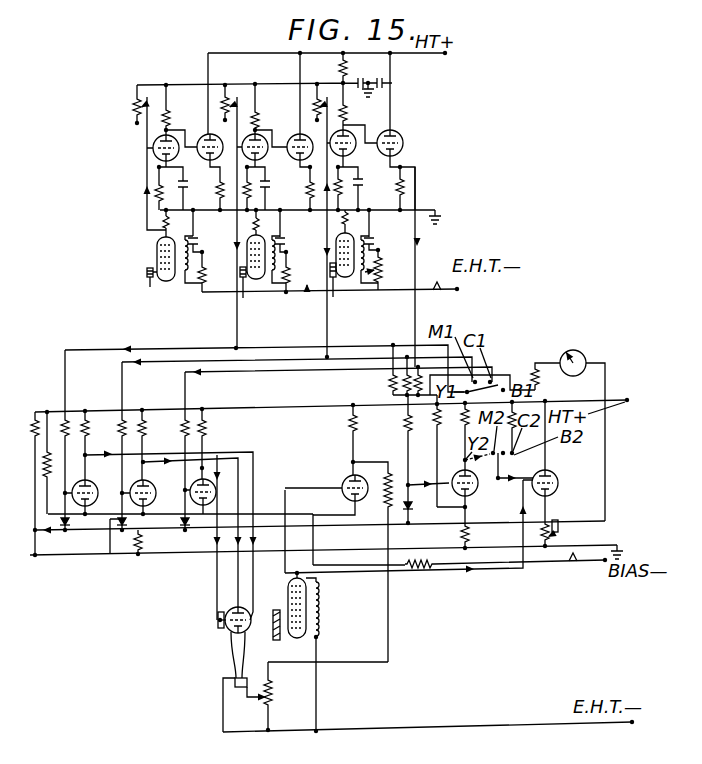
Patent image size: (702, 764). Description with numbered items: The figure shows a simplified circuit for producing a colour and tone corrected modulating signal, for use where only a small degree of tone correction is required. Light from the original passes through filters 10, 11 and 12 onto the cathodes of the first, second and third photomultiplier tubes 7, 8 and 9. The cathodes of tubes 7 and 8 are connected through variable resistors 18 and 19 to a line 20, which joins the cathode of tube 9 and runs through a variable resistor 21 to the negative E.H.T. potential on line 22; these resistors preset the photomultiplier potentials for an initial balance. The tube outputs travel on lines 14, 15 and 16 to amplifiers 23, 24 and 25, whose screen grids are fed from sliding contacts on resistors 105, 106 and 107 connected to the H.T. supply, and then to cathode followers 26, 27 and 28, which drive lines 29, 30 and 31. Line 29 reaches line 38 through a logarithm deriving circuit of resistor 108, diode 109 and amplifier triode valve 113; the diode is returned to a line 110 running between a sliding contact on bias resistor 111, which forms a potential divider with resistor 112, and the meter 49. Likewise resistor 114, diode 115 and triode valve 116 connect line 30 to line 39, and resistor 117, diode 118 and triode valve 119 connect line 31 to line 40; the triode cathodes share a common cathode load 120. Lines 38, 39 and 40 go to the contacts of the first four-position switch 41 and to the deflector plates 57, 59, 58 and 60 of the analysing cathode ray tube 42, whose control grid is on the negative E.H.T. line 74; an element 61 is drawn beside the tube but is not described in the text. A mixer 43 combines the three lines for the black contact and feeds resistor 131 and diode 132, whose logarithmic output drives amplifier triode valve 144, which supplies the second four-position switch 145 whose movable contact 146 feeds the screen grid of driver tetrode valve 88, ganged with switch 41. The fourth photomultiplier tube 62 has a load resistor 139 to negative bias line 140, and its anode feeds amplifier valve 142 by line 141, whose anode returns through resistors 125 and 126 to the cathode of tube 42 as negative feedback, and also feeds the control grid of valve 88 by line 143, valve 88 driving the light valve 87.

The photomultiplier tube 7 is at (157, 248).
The photomultiplier tube 8 is at (239, 244).
The photomultiplier tube 9 is at (334, 243).
The filter 10 is at (145, 288).
The filter 11 is at (252, 292).
The filter 12 is at (345, 291).
The line 14 is at (139, 163).
The line 15 is at (236, 223).
The line 16 is at (326, 214).
The variable resistor 18 is at (205, 279).
The variable resistor 19 is at (289, 270).
The line 20 is at (306, 302).
The variable resistor 21 is at (383, 270).
The line 22 is at (446, 299).
The amplifier 23 is at (178, 155).
The amplifier 24 is at (263, 155).
The amplifier 25 is at (355, 155).
The cathode follower 26 is at (208, 133).
The cathode follower 27 is at (298, 131).
The cathode follower 28 is at (400, 130).
The line 29 is at (158, 349).
The line 30 is at (157, 364).
The line 31 is at (241, 373).
The line 38 is at (256, 596).
The line 39 is at (237, 589).
The line 40 is at (219, 491).
The four-position switch 41 is at (503, 362).
The analysing cathode ray tube 42 is at (236, 664).
The mixer 43 is at (384, 388).
The meter 49 is at (580, 351).
The plate 57 is at (250, 616).
The plate 58 is at (222, 627).
The plate 59 is at (221, 611).
The plate 60 is at (237, 634).
The electrode 61 is at (272, 642).
The fourth photomultiplier tube 62 is at (296, 639).
The line 74 is at (419, 727).
The light valve 87 is at (559, 521).
The driver tetrode valve 88 is at (558, 483).
The resistor 105 is at (136, 100).
The resistor 106 is at (229, 99).
The resistor 107 is at (318, 96).
The resistor 108 is at (66, 419).
The diode 109 is at (66, 533).
The line 110 is at (106, 528).
The bias resistor 111 is at (38, 540).
The resistor 112 is at (37, 411).
The amplifier triode valve 113 is at (94, 462).
The resistor 114 is at (107, 440).
The diode 115 is at (115, 551).
The triode valve 116 is at (153, 462).
The resistor 117 is at (183, 423).
The diode 118 is at (181, 522).
The triode valve 119 is at (208, 486).
The common cathode load 120 is at (144, 543).
The resistor 125 is at (389, 469).
The resistor 126 is at (271, 702).
The resistor 131 is at (411, 430).
The diode 132 is at (420, 507).
The load resistor 139 is at (423, 569).
The line 140 is at (574, 563).
The line 141 is at (288, 501).
The amplifier valve 142 is at (343, 476).
The line 143 is at (457, 570).
The amplifier triode valve 144 is at (456, 497).
The second four-position switch 145 is at (492, 476).
The movable contact 146 is at (501, 470).